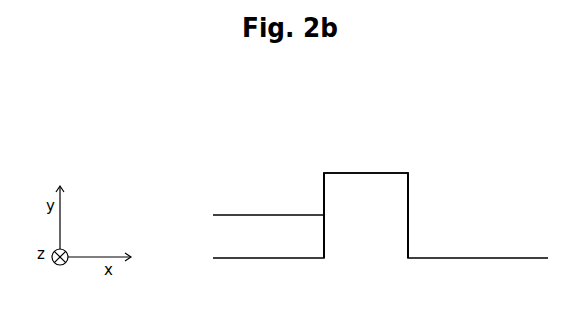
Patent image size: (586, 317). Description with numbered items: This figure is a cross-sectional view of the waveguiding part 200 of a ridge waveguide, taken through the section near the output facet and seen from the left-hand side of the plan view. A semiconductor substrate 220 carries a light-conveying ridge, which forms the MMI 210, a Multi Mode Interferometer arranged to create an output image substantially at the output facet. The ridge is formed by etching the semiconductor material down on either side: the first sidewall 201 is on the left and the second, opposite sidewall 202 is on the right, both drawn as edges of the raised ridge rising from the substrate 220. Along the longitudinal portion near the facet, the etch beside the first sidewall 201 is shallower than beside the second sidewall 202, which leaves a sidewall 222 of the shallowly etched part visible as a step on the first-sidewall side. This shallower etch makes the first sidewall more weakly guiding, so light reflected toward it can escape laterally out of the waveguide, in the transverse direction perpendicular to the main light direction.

The waveguiding part 200 is at (282, 142).
The first sidewall 201 is at (324, 192).
The second sidewall 202 is at (408, 216).
The MMI 210 is at (366, 215).
The semiconductor substrate 220 is at (380, 235).
The sidewall of the shallowly etched part 222 is at (268, 232).